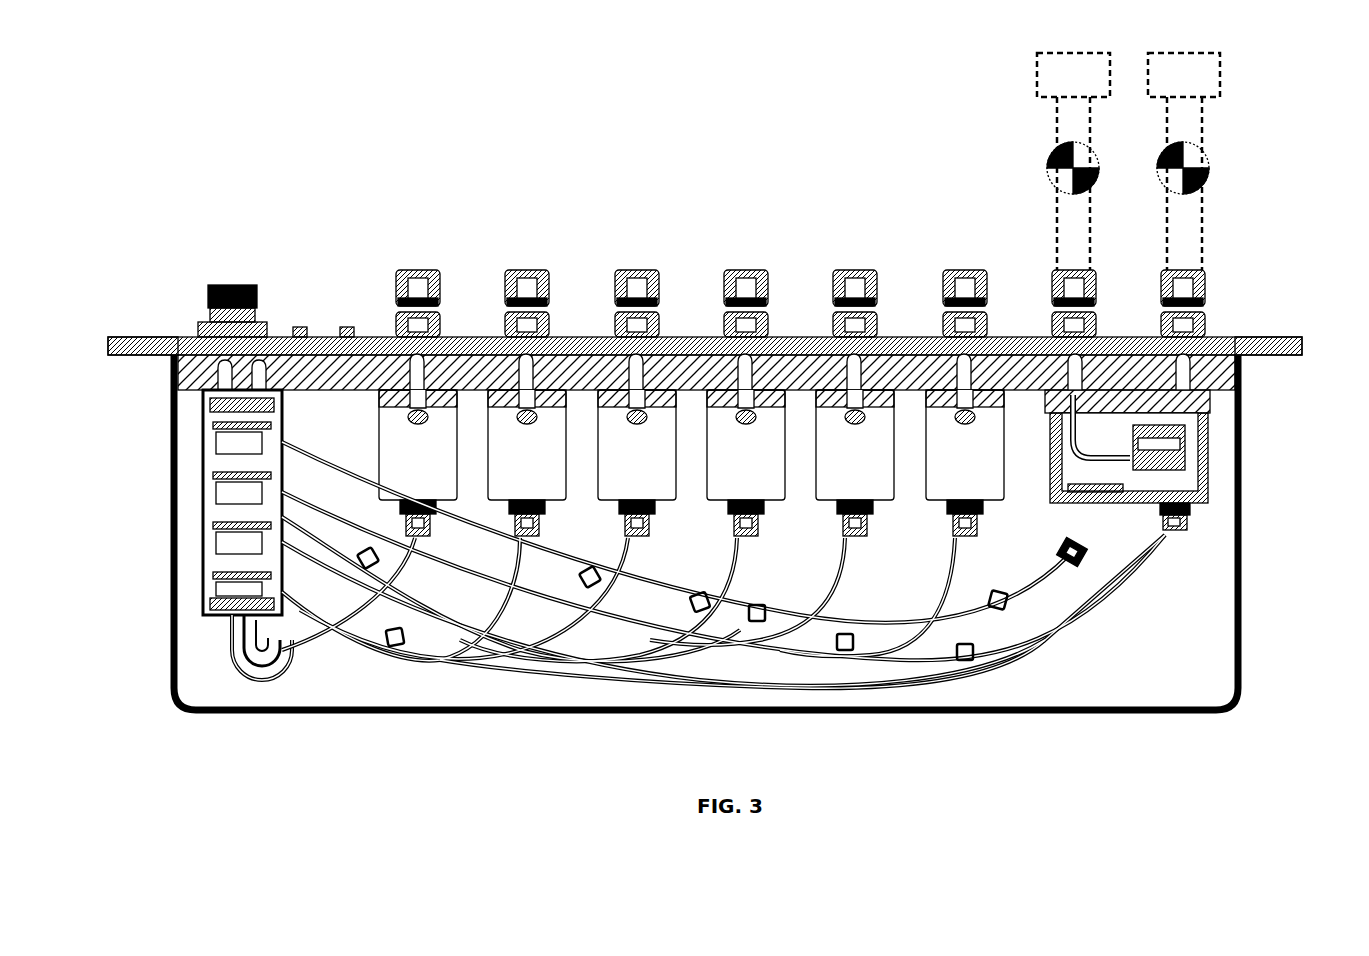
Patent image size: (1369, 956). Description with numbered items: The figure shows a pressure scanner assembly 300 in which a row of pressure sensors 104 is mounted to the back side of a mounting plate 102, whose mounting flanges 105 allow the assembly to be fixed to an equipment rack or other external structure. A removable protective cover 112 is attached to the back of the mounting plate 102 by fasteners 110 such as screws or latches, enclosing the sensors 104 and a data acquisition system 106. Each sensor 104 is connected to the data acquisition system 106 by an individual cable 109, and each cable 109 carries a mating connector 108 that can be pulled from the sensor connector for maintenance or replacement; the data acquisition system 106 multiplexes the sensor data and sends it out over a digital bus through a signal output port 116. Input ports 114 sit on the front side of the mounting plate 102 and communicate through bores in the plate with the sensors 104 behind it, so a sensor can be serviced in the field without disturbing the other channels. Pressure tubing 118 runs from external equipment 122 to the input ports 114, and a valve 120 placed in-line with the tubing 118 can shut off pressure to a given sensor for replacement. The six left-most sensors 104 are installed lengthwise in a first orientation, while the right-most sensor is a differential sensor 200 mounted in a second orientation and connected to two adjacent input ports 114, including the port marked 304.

The pressure scanner assembly 300 is at (722, 158).
The mounting plate 102 is at (186, 345).
The sensors 104 is at (374, 462).
The mounting flanges 105 is at (142, 358).
The data acquisition system 106 is at (201, 535).
The mating connector 108 is at (1166, 532).
The cables 109 is at (1063, 625).
The fasteners 110 is at (1253, 340).
The protective cover 112 is at (1240, 608).
The input ports 114 is at (838, 280).
The signal output port 116 is at (236, 283).
The pressure tubing 118 is at (1052, 238).
The valve 120 is at (1050, 170).
The external equipment 122 is at (1040, 75).
The differential sensor 200 is at (1197, 468).
The fluid connector 304 is at (1195, 290).